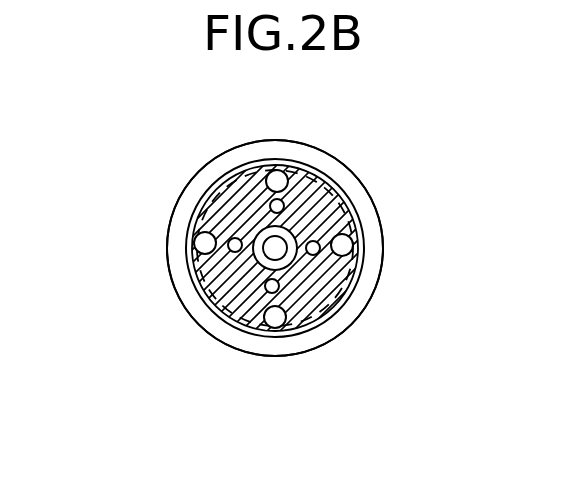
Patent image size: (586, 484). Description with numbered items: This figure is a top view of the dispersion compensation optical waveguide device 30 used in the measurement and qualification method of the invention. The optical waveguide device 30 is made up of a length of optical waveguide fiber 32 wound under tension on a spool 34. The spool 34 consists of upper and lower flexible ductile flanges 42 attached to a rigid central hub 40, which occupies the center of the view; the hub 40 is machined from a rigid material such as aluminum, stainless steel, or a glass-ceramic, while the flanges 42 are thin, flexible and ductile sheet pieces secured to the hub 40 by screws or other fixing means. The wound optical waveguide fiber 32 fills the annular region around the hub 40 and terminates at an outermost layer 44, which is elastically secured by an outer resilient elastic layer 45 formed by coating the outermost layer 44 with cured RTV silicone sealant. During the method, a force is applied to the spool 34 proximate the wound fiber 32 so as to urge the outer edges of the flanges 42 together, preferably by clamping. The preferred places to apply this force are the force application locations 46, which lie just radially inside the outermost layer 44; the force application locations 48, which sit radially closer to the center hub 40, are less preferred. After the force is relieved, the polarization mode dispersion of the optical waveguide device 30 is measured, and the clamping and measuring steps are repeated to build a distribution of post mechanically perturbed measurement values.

The optical waveguide device 30 is at (106, 245).
The optical waveguide fiber 32 is at (315, 215).
The spool 34 is at (188, 355).
The rigid central hub 40 is at (298, 261).
The flexible ductile flanges 42 is at (330, 165).
The outermost layer 44 is at (343, 293).
The outer resilient elastic layer 45 is at (308, 162).
The force application locations 46 is at (278, 168).
The force application locations 48 is at (254, 287).